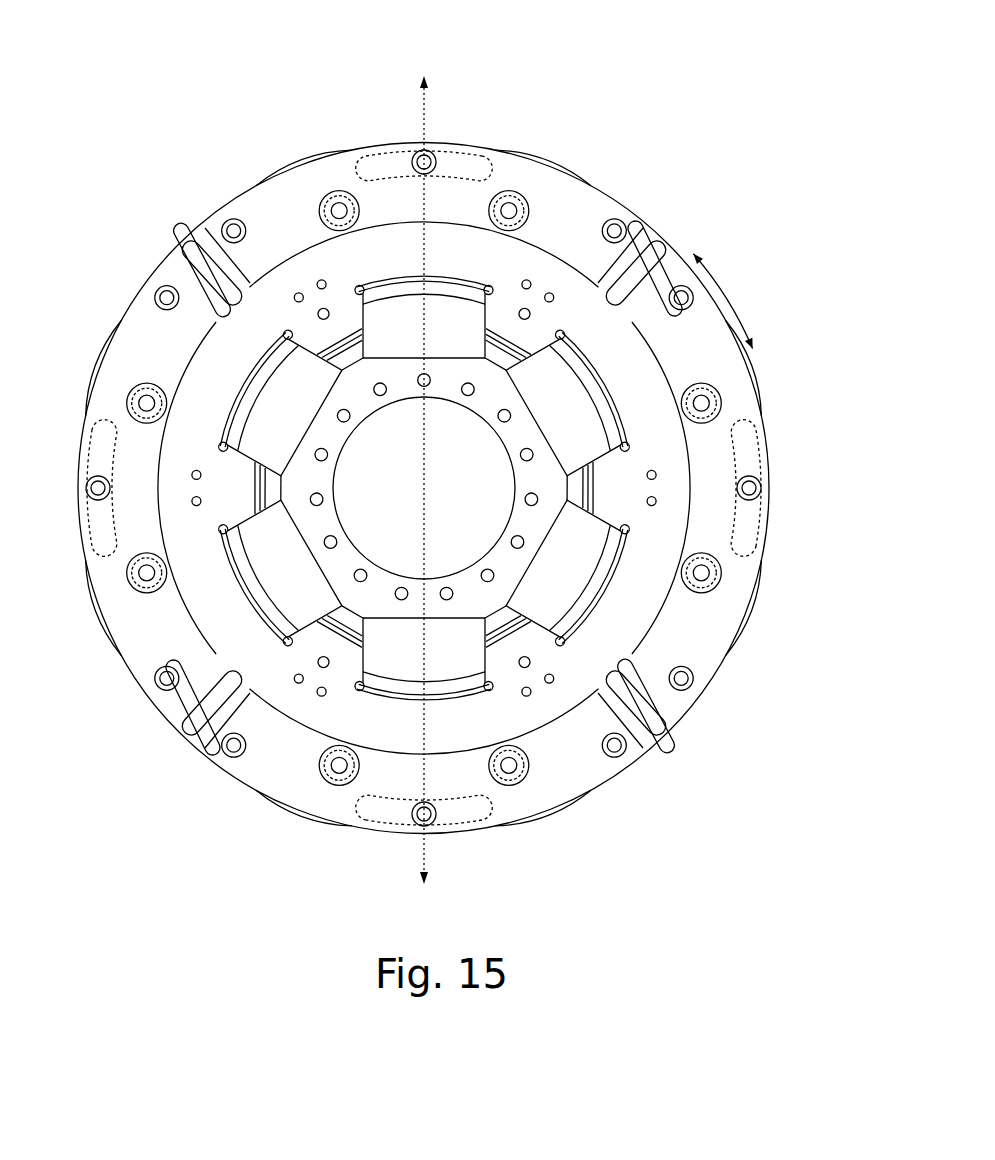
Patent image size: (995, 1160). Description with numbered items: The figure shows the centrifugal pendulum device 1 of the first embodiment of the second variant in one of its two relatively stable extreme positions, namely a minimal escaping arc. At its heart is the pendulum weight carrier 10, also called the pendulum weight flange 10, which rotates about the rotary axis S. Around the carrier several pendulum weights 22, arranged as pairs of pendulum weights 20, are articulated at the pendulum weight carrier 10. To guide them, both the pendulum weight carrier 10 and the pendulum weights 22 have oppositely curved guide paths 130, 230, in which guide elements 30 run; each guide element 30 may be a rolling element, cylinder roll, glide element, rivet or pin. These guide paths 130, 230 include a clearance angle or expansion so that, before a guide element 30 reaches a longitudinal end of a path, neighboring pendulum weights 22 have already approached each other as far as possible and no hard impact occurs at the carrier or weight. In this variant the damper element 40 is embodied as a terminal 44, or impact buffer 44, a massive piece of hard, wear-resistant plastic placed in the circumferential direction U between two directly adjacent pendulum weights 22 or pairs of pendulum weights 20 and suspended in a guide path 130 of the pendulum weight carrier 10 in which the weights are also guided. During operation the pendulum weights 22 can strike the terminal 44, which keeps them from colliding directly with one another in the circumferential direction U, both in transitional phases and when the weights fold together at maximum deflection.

The centrifugal pendulum device 1 is at (658, 80).
The pendulum weight carrier 10 is at (228, 362).
The pair of pendulum weights 20 is at (315, 156).
The pendulum weight 22 is at (580, 200).
The guide element 30 is at (160, 293).
The damper element 40 is at (190, 262).
The terminal 44 is at (190, 262).
The guide path 130 is at (228, 228).
The guide path 230 is at (479, 200).
The radial direction R is at (434, 472).
The rotary axis S is at (428, 486).
The circumferential direction U is at (722, 301).